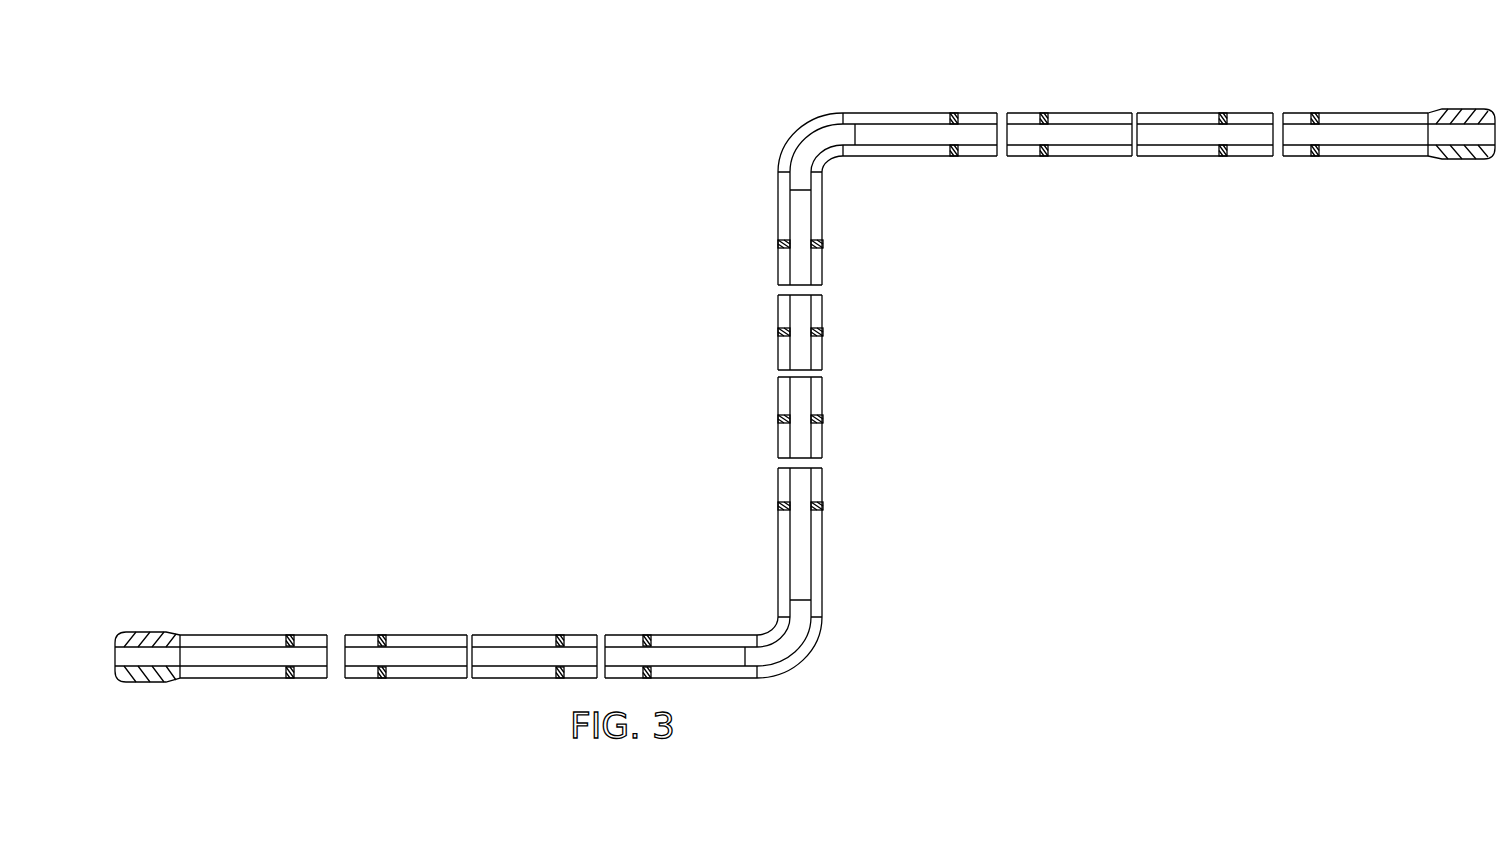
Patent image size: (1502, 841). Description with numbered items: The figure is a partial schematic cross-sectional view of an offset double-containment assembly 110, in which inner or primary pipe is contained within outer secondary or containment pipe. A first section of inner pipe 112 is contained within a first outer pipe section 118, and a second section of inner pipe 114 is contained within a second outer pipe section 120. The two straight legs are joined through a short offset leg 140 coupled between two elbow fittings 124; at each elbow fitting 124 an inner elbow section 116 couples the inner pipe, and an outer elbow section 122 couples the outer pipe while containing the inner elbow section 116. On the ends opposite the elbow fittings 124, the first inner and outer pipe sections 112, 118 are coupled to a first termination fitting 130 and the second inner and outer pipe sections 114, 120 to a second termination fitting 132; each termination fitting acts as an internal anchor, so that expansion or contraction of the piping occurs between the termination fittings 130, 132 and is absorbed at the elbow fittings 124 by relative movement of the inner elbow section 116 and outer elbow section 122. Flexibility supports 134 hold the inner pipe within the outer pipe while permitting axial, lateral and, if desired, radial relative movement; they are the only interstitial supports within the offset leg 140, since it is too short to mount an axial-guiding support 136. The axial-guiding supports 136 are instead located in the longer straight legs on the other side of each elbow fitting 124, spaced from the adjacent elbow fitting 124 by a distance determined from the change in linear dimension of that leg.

The double-containment assembly 110 is at (893, 95).
The first section of inner pipe 112 is at (1178, 113).
The second section of inner pipe 114 is at (455, 635).
The inner elbow section 116 is at (790, 152).
The first outer pipe section 118 is at (1082, 157).
The second outer pipe section 120 is at (446, 678).
The outer elbow section 122 is at (826, 162).
The elbow fitting 124 is at (803, 112).
The first termination fitting 130 is at (1462, 110).
The second termination fitting 132 is at (140, 634).
The flexibility support 134 is at (1040, 118).
The axial-guiding support 136 is at (1312, 118).
The offset leg 140 is at (832, 315).